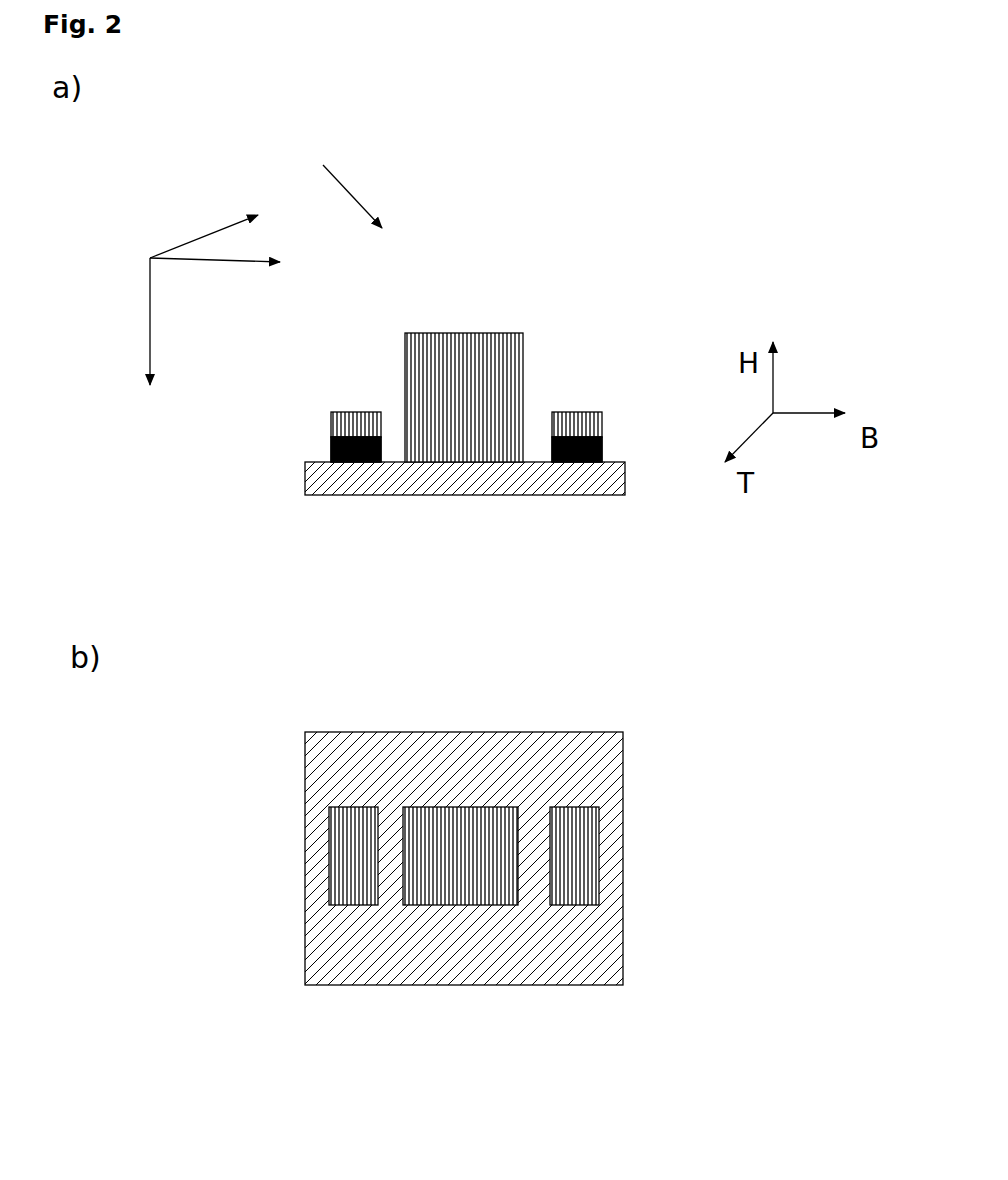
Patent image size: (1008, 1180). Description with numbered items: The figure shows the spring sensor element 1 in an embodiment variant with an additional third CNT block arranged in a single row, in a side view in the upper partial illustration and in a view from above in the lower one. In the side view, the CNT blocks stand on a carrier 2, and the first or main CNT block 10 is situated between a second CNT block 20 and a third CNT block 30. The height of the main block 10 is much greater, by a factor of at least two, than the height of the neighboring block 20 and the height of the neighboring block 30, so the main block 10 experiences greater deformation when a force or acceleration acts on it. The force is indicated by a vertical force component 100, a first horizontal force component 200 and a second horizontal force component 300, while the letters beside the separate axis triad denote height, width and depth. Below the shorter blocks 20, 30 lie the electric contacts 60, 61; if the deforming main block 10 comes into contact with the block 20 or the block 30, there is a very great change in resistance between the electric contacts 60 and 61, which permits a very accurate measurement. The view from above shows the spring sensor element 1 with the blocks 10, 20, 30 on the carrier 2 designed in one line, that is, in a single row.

The spring sensor element 1 is at (341, 188).
The carrier 2 is at (462, 482).
The main block 10 is at (477, 352).
The secondary block 20 is at (365, 420).
The secondary block 30 is at (592, 410).
The electric contact 60 is at (330, 453).
The electric contact 61 is at (602, 448).
The vertical force component 100 is at (114, 321).
The first horizontal force component 200 is at (222, 291).
The second horizontal force component 300 is at (194, 227).